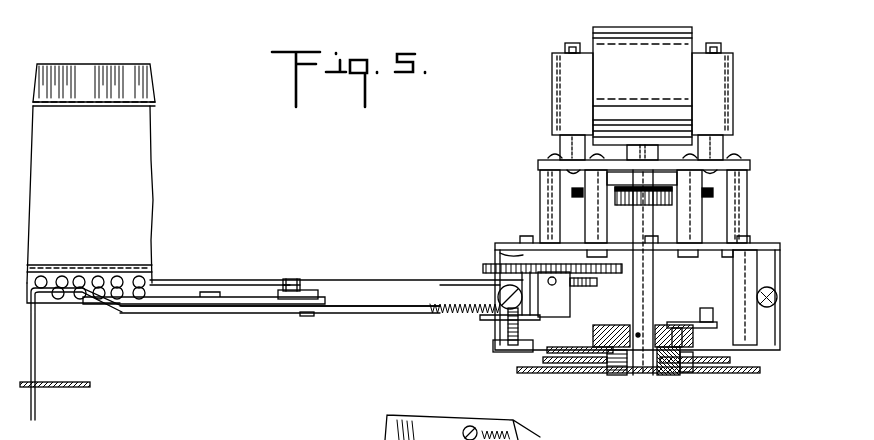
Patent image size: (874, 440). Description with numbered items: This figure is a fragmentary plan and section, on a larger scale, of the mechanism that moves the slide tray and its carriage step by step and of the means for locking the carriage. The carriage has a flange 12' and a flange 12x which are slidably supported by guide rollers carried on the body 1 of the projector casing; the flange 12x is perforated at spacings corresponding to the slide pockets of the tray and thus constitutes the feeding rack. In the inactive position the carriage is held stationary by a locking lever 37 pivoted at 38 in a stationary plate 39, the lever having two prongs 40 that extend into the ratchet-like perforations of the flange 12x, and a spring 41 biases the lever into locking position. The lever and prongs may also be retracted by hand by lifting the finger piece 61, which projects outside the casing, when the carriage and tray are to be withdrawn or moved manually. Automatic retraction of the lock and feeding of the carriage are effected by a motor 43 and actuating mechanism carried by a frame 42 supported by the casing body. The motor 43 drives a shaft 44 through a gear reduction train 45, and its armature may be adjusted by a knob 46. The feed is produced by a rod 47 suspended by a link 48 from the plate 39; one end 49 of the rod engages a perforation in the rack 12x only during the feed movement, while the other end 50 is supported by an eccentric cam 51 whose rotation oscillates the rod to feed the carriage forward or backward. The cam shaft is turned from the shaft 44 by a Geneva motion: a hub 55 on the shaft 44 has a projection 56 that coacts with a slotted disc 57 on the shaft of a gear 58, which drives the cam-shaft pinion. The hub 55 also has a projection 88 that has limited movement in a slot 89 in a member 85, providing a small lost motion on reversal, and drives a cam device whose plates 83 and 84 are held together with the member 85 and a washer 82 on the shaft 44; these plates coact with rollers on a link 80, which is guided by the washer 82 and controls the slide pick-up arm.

The body portion 1 is at (85, 390).
The flange 12' is at (113, 85).
The flange 12x is at (150, 272).
The locking lever 37 is at (341, 316).
The pivot 38 is at (306, 318).
The stationary plate 39 is at (248, 298).
The prongs 40 is at (70, 300).
The spring 41 is at (435, 314).
The frame 42 is at (780, 270).
The motor 43 is at (660, 93).
The shaft 44 is at (634, 365).
The gear reduction train 45 is at (570, 190).
The knob 46 is at (650, 203).
The rod 47 is at (406, 281).
The link 48 is at (306, 286).
The end of the rod 49 is at (60, 280).
The end of the rod 50 is at (598, 284).
The eccentric cam 51 is at (523, 275).
The hub 55 is at (700, 322).
The projection 56 is at (705, 308).
The slotted disc 57 is at (596, 322).
The gear 58 is at (490, 265).
The finger piece 61 is at (36, 395).
The link 80 is at (706, 373).
The washer 82 is at (685, 368).
The plate 83 is at (727, 373).
The plate 84 is at (566, 363).
The member 85 is at (601, 365).
The projection 88 is at (667, 368).
The slot 89 is at (697, 373).